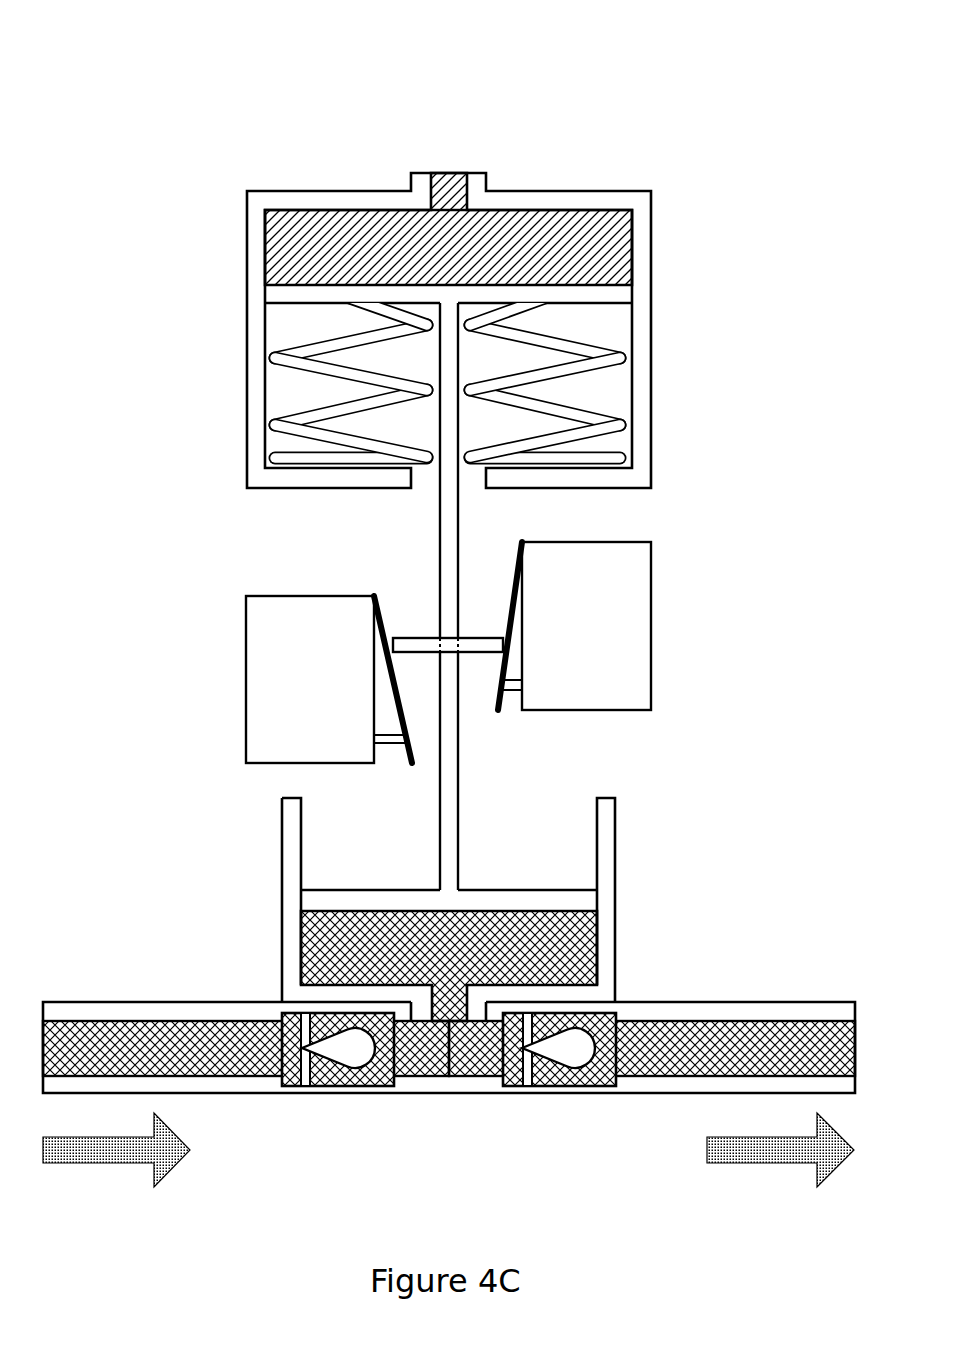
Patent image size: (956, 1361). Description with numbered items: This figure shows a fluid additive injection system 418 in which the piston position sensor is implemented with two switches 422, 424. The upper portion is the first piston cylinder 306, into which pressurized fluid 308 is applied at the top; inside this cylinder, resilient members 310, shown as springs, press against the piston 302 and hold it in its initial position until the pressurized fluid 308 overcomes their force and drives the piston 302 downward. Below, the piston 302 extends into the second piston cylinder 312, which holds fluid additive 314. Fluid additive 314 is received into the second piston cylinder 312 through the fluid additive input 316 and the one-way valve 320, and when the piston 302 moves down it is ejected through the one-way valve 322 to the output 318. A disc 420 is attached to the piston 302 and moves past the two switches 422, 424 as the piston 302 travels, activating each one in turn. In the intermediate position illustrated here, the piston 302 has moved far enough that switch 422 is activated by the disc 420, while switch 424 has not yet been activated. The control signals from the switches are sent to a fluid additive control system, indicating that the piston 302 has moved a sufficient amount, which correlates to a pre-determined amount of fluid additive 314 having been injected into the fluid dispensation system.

The fluid additive injection system 418 is at (464, 250).
The first piston cylinder 306 is at (645, 190).
The pressurized fluid 308 is at (452, 160).
The resilient members 310 is at (283, 417).
The piston 302 is at (467, 890).
The second piston cylinder 312 is at (614, 797).
The fluid additive 314 is at (575, 940).
The fluid additive input 316 is at (62, 1002).
The output 318 is at (800, 1002).
The one-way valve 320 is at (337, 1087).
The one-way valve 322 is at (560, 1087).
The disc 420 is at (421, 636).
The switch 422 is at (643, 540).
The switch 424 is at (255, 595).